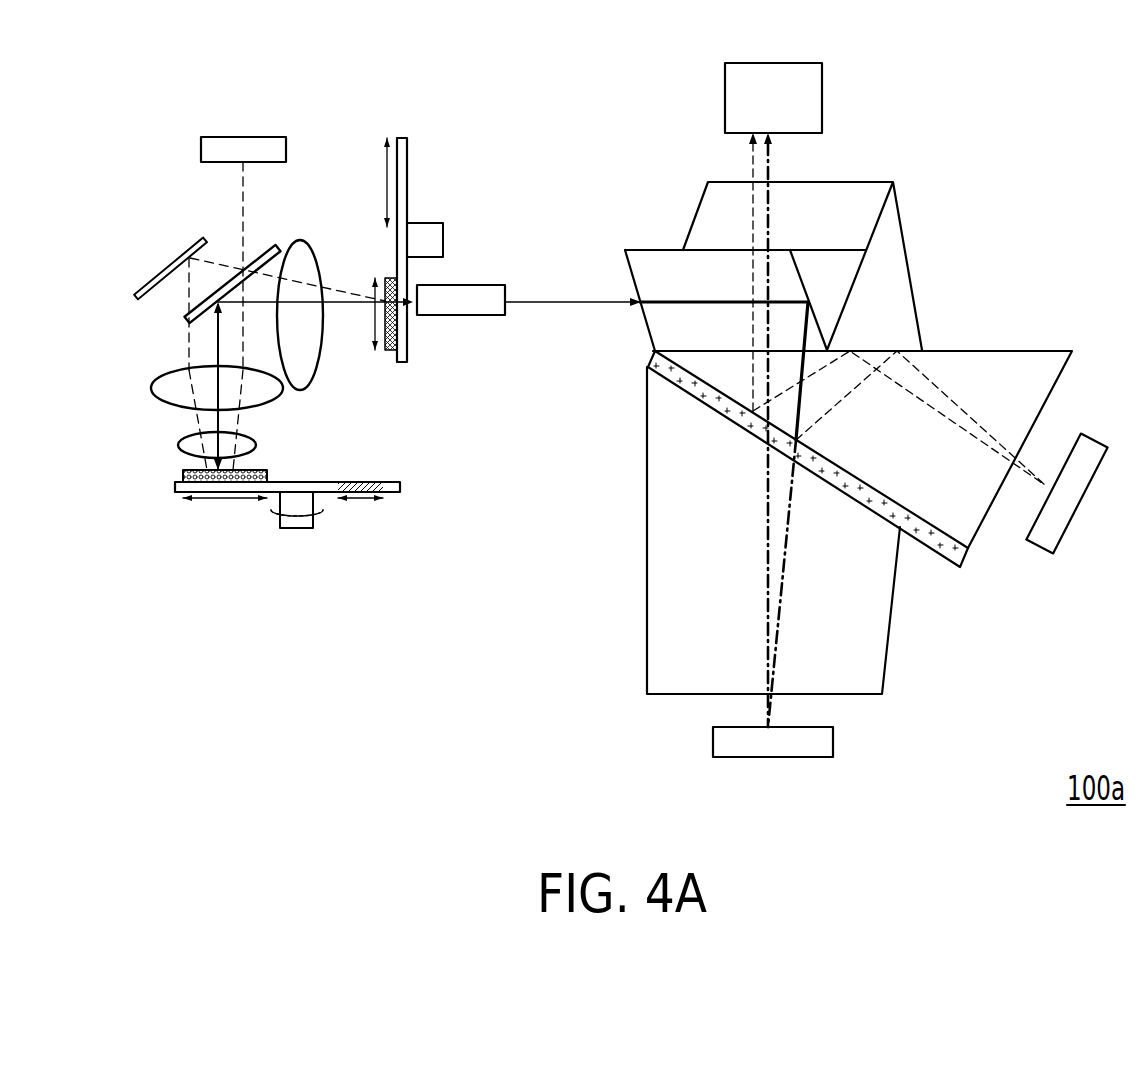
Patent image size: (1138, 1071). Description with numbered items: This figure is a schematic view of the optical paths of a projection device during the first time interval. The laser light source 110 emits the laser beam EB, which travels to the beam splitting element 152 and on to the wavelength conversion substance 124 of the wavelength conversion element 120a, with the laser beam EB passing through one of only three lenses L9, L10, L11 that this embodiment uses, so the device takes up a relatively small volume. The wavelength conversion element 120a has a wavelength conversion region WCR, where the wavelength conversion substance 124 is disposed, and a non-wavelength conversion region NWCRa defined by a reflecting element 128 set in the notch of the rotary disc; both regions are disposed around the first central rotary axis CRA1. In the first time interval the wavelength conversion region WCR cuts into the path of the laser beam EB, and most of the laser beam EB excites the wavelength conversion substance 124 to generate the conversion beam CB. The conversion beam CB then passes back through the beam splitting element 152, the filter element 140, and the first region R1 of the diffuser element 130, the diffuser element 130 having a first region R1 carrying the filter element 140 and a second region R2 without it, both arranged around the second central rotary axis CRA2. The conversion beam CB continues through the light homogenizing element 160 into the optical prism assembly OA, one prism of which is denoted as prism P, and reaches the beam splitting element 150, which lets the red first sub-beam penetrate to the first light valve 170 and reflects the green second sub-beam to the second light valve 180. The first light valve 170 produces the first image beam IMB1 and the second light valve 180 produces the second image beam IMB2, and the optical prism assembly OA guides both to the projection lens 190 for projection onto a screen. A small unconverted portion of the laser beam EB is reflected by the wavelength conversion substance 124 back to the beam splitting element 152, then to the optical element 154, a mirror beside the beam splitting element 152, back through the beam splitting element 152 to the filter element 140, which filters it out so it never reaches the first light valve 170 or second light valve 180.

The laser light source 110 is at (219, 145).
The laser beam EB is at (243, 189).
The optical element 154 is at (157, 273).
The beam splitting element 152 is at (278, 247).
The lens L11 is at (310, 270).
The conversion beam CB is at (217, 333).
The lens L9 is at (160, 388).
The lens L10 is at (185, 445).
The wavelength conversion element 120a is at (310, 510).
The reflecting element 128 is at (360, 481).
The wavelength conversion substance 124 is at (257, 466).
The wavelength conversion region WCR is at (193, 498).
The non-wavelength conversion region NWCRa is at (360, 500).
The first central rotary axis CRA1 is at (297, 528).
The diffuser element 130 is at (436, 250).
The filter element 140 is at (388, 352).
The first region R1 is at (361, 314).
The second region R2 is at (371, 182).
The second central rotary axis CRA2 is at (423, 232).
The light homogenizing element 160 is at (460, 312).
The optical prism assembly OA is at (852, 438).
The prism P is at (662, 548).
The beam splitting element 150 is at (970, 562).
The projection lens 190 is at (812, 98).
The second image beam IMB2 is at (752, 165).
The first image beam IMB1 is at (770, 165).
The second light valve 180 is at (1067, 515).
The first light valve 170 is at (822, 740).